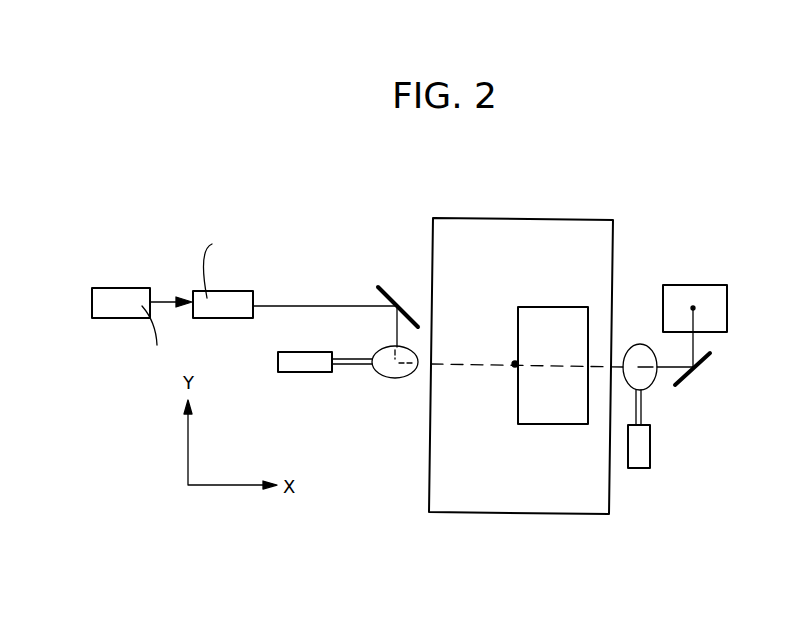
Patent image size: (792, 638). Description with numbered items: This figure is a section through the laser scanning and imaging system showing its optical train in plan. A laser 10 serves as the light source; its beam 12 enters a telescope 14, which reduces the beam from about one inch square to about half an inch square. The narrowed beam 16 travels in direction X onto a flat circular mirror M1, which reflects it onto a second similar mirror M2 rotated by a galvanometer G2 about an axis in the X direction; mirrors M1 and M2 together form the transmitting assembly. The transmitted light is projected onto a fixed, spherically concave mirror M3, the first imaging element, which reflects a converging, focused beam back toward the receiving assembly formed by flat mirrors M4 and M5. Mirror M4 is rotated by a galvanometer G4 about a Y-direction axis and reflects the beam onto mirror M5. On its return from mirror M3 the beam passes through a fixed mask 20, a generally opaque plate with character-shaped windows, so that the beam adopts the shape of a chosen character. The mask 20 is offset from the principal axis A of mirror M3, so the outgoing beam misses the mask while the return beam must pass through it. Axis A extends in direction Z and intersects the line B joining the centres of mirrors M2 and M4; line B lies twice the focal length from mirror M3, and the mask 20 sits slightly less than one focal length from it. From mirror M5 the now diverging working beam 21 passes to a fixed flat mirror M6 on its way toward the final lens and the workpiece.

The laser 10 is at (108, 296).
The beam 12 is at (162, 301).
The telescope 14 is at (218, 308).
The narrowed beam 16 is at (312, 306).
The mask 20 is at (552, 315).
The working beam 21 is at (660, 369).
The mirror M1 is at (400, 292).
The mirror M2 is at (388, 368).
The spherically concave mirror M3 is at (507, 225).
The mirror M4 is at (642, 352).
The mirror M5 is at (703, 366).
The fixed flat mirror M6 is at (698, 291).
The galvanometer G2 is at (322, 368).
The galvanometer G4 is at (642, 455).
The principal axis A is at (513, 367).
The line B is at (467, 363).